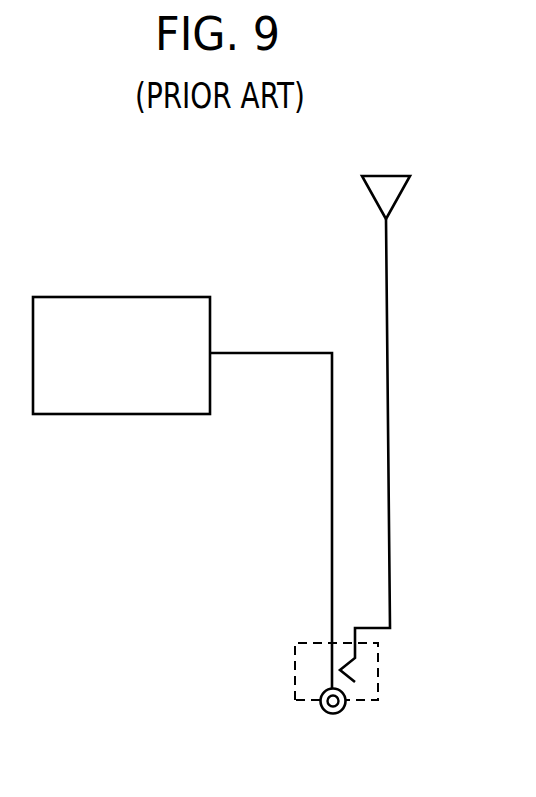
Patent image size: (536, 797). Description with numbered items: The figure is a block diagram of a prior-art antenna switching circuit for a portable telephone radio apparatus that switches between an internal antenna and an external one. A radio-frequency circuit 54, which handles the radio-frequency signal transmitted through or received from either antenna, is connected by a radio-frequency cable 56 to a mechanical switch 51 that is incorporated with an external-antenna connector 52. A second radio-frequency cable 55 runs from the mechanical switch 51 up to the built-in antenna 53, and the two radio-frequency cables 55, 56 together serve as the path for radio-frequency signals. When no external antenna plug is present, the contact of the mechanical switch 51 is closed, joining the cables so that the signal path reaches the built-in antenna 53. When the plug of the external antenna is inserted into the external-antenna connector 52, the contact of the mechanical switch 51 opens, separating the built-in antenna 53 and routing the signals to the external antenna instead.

The mechanical switch 51 is at (363, 663).
The external-antenna connector 52 is at (345, 710).
The built-in antenna 53 is at (393, 193).
The radio-frequency circuit 54 is at (57, 318).
The radio-frequency cable 55 is at (390, 466).
The radio-frequency cable 56 is at (331, 466).